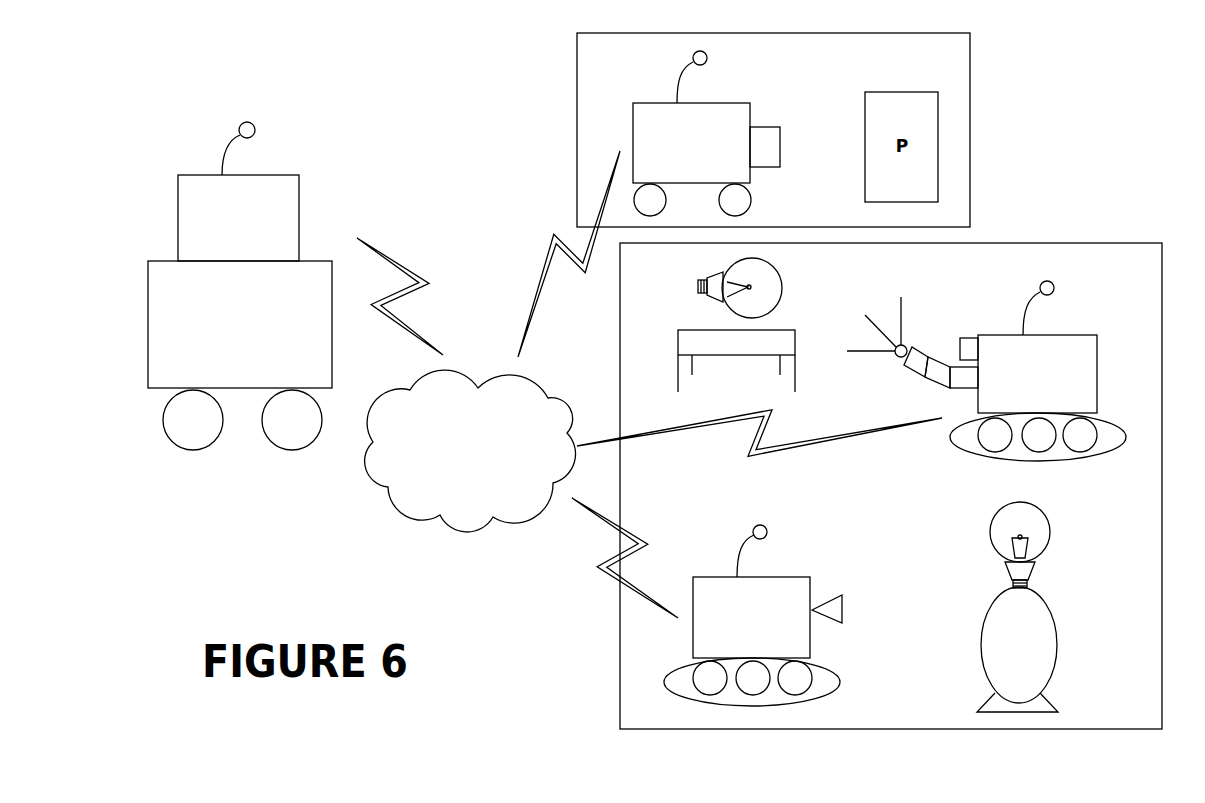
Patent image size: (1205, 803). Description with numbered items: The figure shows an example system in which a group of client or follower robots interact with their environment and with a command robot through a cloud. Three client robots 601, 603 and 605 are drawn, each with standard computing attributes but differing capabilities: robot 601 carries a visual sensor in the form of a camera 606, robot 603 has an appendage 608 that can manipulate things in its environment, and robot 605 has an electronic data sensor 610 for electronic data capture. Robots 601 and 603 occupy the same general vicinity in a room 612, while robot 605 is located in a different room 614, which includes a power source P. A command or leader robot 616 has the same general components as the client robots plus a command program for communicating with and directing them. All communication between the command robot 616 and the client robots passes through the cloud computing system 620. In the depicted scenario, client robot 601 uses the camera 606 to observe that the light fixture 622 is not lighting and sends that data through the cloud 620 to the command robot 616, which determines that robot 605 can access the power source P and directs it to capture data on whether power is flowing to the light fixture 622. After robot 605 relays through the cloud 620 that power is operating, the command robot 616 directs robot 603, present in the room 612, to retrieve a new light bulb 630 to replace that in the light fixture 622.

The client robot 601 is at (810, 645).
The client robot 603 is at (1097, 365).
The client robot 605 is at (738, 103).
The camera 606 is at (973, 338).
The appendage 608 is at (893, 357).
The electronic data sensor 610 is at (780, 148).
The room 612 is at (620, 373).
The room 614 is at (577, 142).
The command robot 616 is at (332, 367).
The cloud computing system 620 is at (437, 517).
The light fixture 622 is at (1057, 632).
The light bulb 630 is at (778, 272).